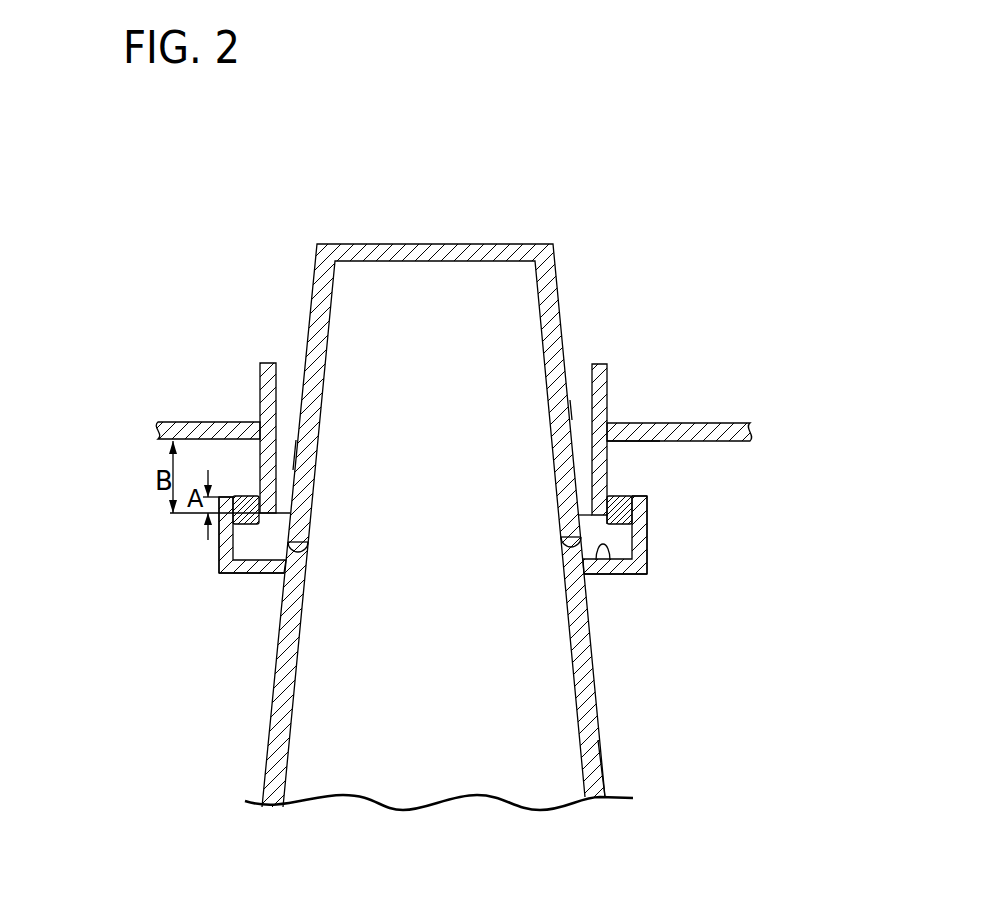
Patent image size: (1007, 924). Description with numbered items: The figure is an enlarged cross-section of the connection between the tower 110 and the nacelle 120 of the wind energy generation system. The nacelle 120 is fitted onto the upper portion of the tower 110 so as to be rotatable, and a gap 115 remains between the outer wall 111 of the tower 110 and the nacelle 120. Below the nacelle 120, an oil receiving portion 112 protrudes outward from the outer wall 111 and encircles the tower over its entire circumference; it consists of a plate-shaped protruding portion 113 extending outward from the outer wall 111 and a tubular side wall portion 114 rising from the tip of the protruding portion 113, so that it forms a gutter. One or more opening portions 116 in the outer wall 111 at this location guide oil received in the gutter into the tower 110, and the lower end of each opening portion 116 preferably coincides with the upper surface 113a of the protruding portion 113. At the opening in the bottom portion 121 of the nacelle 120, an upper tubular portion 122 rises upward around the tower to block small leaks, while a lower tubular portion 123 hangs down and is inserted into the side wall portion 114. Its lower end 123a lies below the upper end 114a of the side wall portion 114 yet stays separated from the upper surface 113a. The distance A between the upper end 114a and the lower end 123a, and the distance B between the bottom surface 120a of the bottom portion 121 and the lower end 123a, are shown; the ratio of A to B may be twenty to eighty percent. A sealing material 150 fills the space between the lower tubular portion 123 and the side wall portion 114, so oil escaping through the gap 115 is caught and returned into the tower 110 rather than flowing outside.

The tower 110 is at (558, 240).
The outer wall 111 is at (603, 758).
The oil receiving portion 112 is at (765, 577).
The protruding portion 113 is at (255, 575).
The upper surface 113a is at (607, 556).
The side wall portion 114 is at (218, 552).
The upper end 114a is at (225, 497).
The gap 115 is at (288, 460).
The opening portion 116 is at (304, 553).
The nacelle 120 is at (727, 416).
The bottom surface 120a is at (165, 442).
The bottom portion 121 is at (203, 422).
The upper tubular portion 122 is at (608, 387).
The lower tubular portion 123 is at (609, 446).
The lower end 123a is at (265, 517).
The sealing material 150 is at (243, 527).